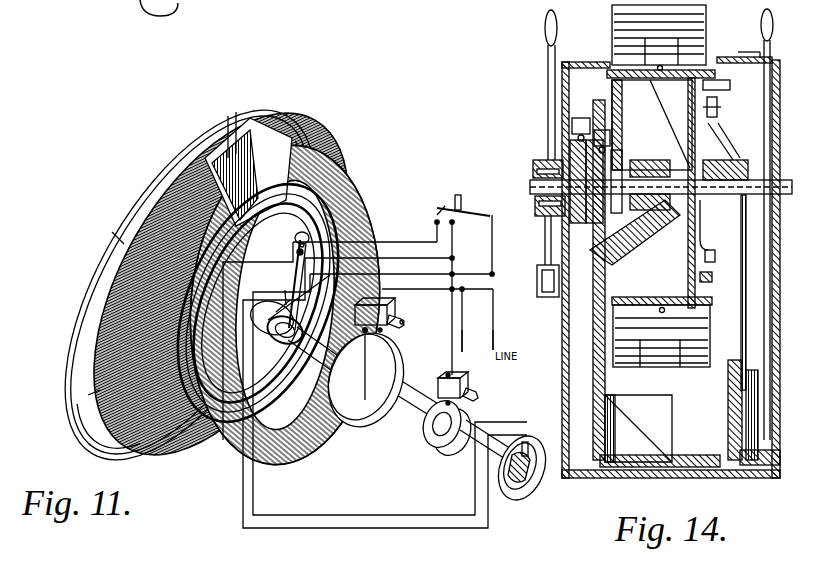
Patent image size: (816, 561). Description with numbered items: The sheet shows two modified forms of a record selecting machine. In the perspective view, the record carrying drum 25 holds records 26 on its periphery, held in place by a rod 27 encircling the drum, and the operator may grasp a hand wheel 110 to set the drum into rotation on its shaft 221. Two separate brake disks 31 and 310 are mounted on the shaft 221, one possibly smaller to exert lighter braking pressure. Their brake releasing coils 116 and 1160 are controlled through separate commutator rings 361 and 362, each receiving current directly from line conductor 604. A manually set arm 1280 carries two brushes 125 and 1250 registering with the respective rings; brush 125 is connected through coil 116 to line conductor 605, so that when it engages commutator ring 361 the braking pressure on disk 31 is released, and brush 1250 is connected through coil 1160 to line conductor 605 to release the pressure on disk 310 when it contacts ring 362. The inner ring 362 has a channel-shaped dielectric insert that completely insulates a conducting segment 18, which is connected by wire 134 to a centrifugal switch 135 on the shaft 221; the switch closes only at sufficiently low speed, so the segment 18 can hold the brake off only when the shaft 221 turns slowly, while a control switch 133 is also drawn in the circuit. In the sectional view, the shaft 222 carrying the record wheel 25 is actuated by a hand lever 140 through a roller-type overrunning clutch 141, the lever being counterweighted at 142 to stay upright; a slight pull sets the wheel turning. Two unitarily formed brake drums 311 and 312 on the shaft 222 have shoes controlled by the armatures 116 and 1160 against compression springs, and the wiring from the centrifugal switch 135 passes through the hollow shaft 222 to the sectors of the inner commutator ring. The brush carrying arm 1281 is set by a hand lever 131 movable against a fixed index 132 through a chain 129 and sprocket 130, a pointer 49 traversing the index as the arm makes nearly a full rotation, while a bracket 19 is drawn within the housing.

In FIG. 11, the hand wheel 110 is at (120, 234).
In FIG. 11, the records 26 is at (310, 152).
In FIG. 14, the records 26 is at (676, 368).
In FIG. 11, the rod 27 is at (226, 222).
In FIG. 11, the brush 125 is at (320, 218).
In FIG. 11, the brush 1250 is at (294, 293).
In FIG. 11, the arm 1280 is at (296, 297).
In FIG. 11, the drum 25 is at (370, 205).
In FIG. 14, the drum 25 is at (610, 60).
In FIG. 11, the switch 133 is at (446, 206).
In FIG. 11, the brake releasing coil 116 is at (390, 312).
In FIG. 14, the brake releasing coil 116 is at (596, 134).
In FIG. 11, the brake releasing coil 1160 is at (470, 388).
In FIG. 14, the brake releasing coil 1160 is at (572, 122).
In FIG. 11, the line conductor 605 is at (455, 332).
In FIG. 11, the line conductor 604 is at (525, 332).
In FIG. 11, the brake disk 31 is at (370, 405).
In FIG. 11, the shaft 221 is at (415, 410).
In FIG. 11, the brake disk 310 is at (452, 452).
In FIG. 11, the centrifugal switch 135 is at (540, 488).
In FIG. 14, the centrifugal switch 135 is at (619, 148).
In FIG. 11, the wire 134 is at (305, 505).
In FIG. 11, the commutator ring 361 is at (205, 448).
In FIG. 14, the commutator ring 361 is at (713, 278).
In FIG. 11, the commutator ring 362 is at (228, 470).
In FIG. 14, the hand lever 140 is at (546, 62).
In FIG. 14, the overrunning clutch 141 is at (532, 172).
In FIG. 14, the shaft 222 is at (530, 187).
In FIG. 14, the counterweight 142 is at (537, 270).
In FIG. 14, the brake drum 311 is at (575, 152).
In FIG. 14, the brake drum 312 is at (594, 160).
In FIG. 14, the pointer 49 is at (757, 50).
In FIG. 14, the fixed index 132 is at (752, 57).
In FIG. 14, the bracket 19 is at (732, 86).
In FIG. 14, the hand lever 131 is at (762, 124).
In FIG. 14, the brush carrying arm 1281 is at (725, 146).
In FIG. 14, the chain 129 is at (740, 244).
In FIG. 14, the conducting segment 18 is at (716, 258).
In FIG. 14, the sprocket 130 is at (745, 418).